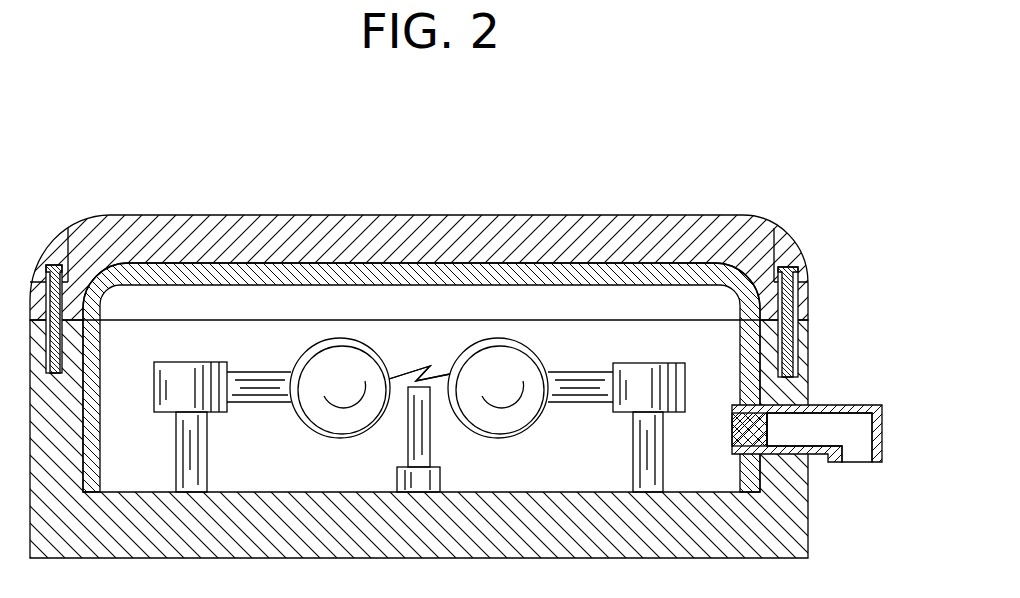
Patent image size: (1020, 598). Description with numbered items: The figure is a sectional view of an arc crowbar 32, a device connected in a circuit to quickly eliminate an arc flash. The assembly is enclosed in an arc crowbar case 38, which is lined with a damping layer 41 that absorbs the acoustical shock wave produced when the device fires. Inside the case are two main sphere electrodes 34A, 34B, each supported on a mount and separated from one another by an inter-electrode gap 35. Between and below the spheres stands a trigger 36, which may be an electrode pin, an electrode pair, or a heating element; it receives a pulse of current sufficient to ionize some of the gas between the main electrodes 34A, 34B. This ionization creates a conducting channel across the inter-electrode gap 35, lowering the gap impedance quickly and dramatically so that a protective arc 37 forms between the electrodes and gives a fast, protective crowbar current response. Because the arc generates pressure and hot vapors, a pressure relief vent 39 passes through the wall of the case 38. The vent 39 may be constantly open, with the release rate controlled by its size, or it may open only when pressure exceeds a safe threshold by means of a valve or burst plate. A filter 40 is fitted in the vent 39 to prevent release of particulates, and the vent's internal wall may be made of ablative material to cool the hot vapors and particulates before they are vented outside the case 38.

The arc crowbar 32 is at (413, 168).
The arc crowbar case 38 is at (523, 214).
The damping layer 41 is at (677, 286).
The sphere electrode 34A is at (534, 353).
The sphere electrode 34B is at (305, 352).
The inter-electrode gap 35 is at (395, 336).
The trigger 36 is at (408, 447).
The protective arc 37 is at (415, 366).
The pressure relief vent 39 is at (857, 405).
The filter 40 is at (732, 436).